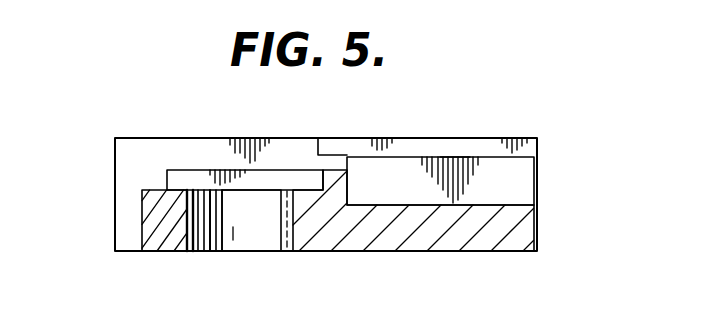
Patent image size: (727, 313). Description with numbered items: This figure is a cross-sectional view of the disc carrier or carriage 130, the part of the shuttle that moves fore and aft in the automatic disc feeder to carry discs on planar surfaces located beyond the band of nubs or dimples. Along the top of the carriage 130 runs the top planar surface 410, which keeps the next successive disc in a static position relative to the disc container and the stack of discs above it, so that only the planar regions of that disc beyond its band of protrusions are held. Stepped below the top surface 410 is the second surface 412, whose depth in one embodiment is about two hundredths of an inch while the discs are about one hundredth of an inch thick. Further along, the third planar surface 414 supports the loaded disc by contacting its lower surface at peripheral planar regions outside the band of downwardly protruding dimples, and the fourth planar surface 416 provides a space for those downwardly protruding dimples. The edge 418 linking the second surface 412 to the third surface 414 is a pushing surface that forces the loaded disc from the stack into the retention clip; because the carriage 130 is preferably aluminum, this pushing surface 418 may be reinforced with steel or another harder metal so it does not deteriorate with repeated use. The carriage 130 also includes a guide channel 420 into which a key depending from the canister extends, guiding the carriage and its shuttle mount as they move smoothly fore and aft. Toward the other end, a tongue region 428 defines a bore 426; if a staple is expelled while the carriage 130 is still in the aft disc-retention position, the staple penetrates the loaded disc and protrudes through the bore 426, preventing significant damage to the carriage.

The disc carriage 130 is at (537, 231).
The top planar surface 410 is at (507, 139).
The second surface 412 is at (449, 158).
The third planar surface 414 is at (343, 170).
The fourth planar surface 416 is at (297, 191).
The pushing surface 418 is at (343, 168).
The guide channel 420 is at (418, 190).
The bore 426 is at (210, 251).
The tongue region 428 is at (142, 231).